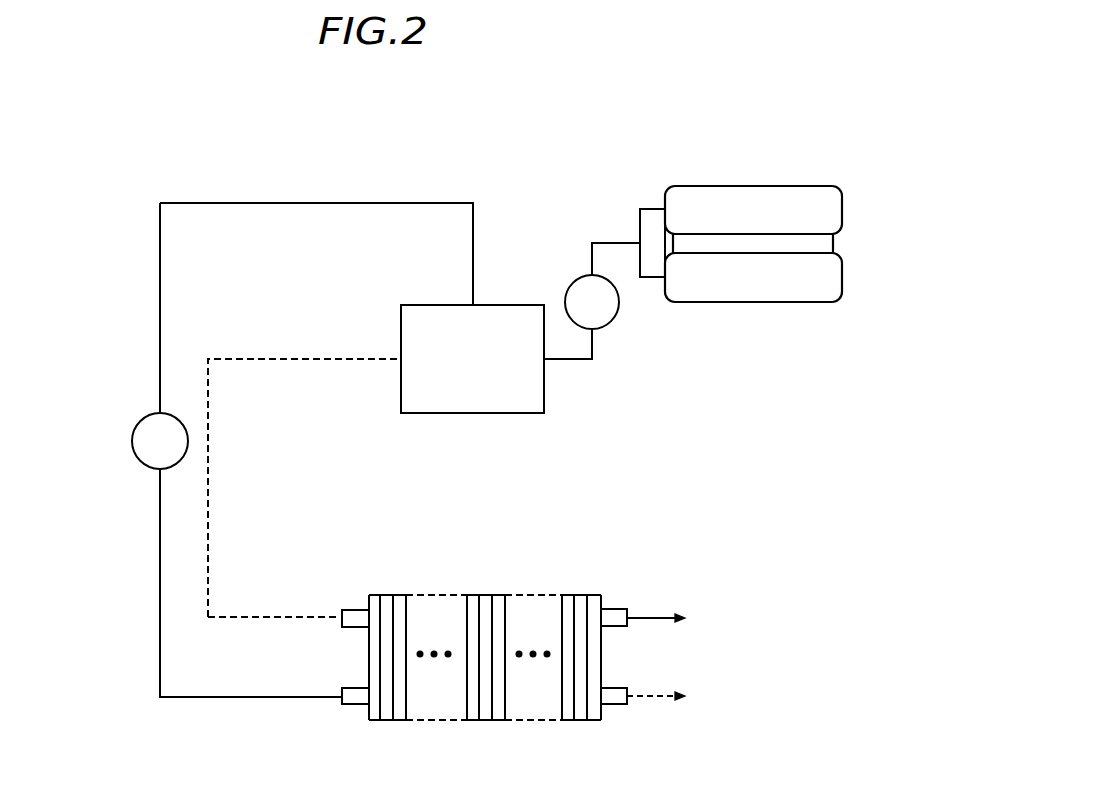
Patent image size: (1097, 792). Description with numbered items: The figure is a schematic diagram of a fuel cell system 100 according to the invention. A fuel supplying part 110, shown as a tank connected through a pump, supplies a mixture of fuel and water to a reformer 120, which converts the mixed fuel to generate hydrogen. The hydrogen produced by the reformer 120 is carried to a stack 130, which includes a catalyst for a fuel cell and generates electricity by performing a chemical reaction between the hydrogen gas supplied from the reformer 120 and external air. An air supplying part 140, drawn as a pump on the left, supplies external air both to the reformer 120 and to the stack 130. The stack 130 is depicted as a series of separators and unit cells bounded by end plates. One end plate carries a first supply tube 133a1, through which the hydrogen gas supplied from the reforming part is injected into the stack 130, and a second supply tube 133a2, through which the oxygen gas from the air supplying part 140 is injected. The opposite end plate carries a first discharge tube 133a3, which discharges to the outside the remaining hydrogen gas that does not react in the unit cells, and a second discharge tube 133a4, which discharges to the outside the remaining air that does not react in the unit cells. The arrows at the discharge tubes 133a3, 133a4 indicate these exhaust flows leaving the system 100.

The fuel cell system 100 is at (110, 164).
The fuel supplying part 110 is at (597, 212).
The reformer 120 is at (437, 288).
The stack 130 is at (466, 566).
The air supplying part 140 is at (123, 406).
The first supply tube 133a1 is at (340, 627).
The second supply tube 133a2 is at (340, 704).
The first discharge tube 133a3 is at (630, 704).
The second discharge tube 133a4 is at (630, 627).